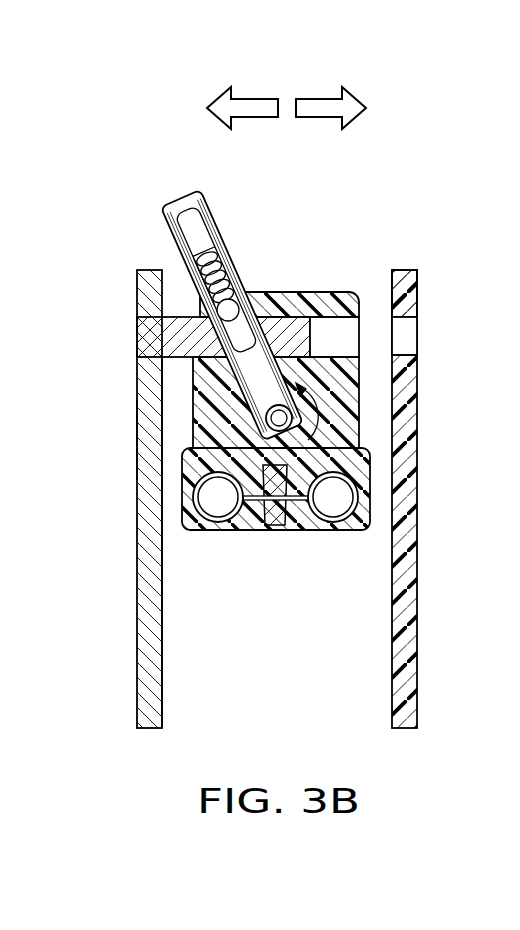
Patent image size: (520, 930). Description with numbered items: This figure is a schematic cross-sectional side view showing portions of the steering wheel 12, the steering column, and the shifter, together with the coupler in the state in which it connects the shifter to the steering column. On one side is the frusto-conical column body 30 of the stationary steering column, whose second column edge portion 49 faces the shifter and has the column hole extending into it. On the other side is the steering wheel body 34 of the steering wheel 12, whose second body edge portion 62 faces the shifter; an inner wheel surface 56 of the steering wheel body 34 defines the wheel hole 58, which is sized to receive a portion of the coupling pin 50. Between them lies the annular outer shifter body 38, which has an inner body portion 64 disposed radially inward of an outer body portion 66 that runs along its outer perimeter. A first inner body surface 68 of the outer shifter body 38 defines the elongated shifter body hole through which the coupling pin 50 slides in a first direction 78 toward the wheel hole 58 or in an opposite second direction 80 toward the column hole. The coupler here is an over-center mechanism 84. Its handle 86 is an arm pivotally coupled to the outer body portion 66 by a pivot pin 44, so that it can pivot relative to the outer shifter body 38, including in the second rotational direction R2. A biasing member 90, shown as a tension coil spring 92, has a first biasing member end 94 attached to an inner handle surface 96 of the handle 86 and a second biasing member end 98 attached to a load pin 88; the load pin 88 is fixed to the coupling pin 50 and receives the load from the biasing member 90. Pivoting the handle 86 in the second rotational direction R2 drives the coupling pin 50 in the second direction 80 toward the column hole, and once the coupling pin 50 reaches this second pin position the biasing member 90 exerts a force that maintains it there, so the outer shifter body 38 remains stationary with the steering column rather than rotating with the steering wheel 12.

The steering wheel 12 is at (418, 283).
The column body 30 is at (148, 696).
The steering wheel body 34 is at (418, 696).
The outer shifter body 38 is at (372, 477).
The pivot pin 44 is at (279, 418).
The second column edge portion 49 is at (162, 648).
The coupling pin 50 is at (293, 292).
The inner wheel surface 56 is at (402, 318).
The wheel hole 58 is at (402, 355).
The second body edge portion 62 is at (390, 292).
The inner body portion 64 is at (137, 445).
The outer body portion 66 is at (329, 317).
The first inner body surface 68 is at (400, 302).
The first direction 78 is at (315, 99).
The second direction 80 is at (259, 99).
The over-center mechanism 84 is at (211, 205).
The handle 86 is at (224, 246).
The load pin 88 is at (138, 352).
The biasing member 90 is at (230, 268).
The tension coil spring 92 is at (238, 290).
The first biasing member end 94 is at (207, 264).
The inner handle surface 96 is at (203, 258).
The second biasing member end 98 is at (217, 311).
The second rotational direction R2 is at (322, 410).